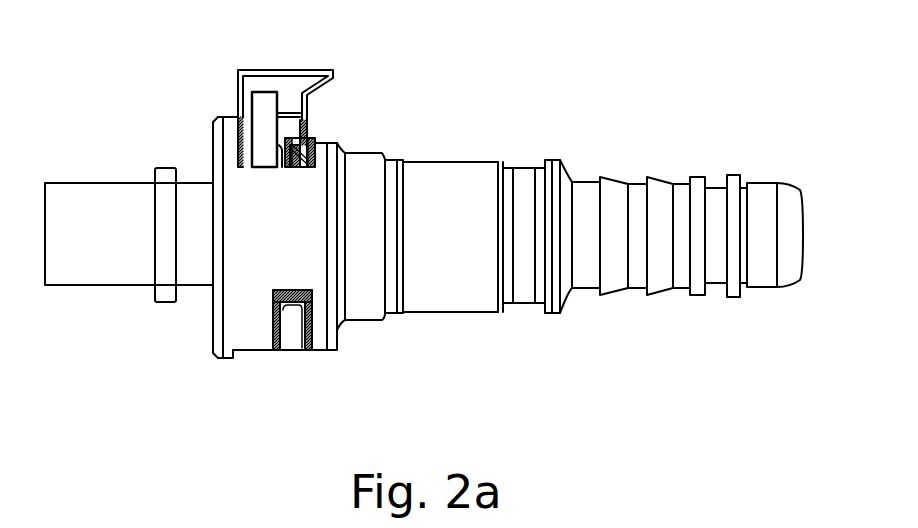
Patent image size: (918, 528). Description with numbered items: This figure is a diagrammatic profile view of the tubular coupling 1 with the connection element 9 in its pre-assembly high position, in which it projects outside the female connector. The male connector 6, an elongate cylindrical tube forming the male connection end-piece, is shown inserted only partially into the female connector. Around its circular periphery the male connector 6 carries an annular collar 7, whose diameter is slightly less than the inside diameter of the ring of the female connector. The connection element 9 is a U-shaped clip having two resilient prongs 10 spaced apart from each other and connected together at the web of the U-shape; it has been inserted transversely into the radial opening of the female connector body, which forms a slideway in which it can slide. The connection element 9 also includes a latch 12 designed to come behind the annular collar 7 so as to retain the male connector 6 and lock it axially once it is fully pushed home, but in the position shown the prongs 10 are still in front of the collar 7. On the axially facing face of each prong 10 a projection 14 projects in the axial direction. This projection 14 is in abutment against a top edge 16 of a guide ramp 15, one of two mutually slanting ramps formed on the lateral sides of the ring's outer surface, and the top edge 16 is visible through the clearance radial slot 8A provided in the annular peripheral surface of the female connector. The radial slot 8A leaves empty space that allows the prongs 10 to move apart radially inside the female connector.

The tubular coupling 1 is at (430, 121).
The male connector 6 is at (93, 270).
The annular collar 7 is at (163, 168).
The clearance radial slot 8A is at (300, 368).
The connection element 9 is at (290, 82).
The resilient prong 10 is at (298, 158).
The latch 12 is at (238, 117).
The projection 14 is at (315, 300).
The guide ramp 15 is at (301, 350).
The top edge 16 is at (298, 325).